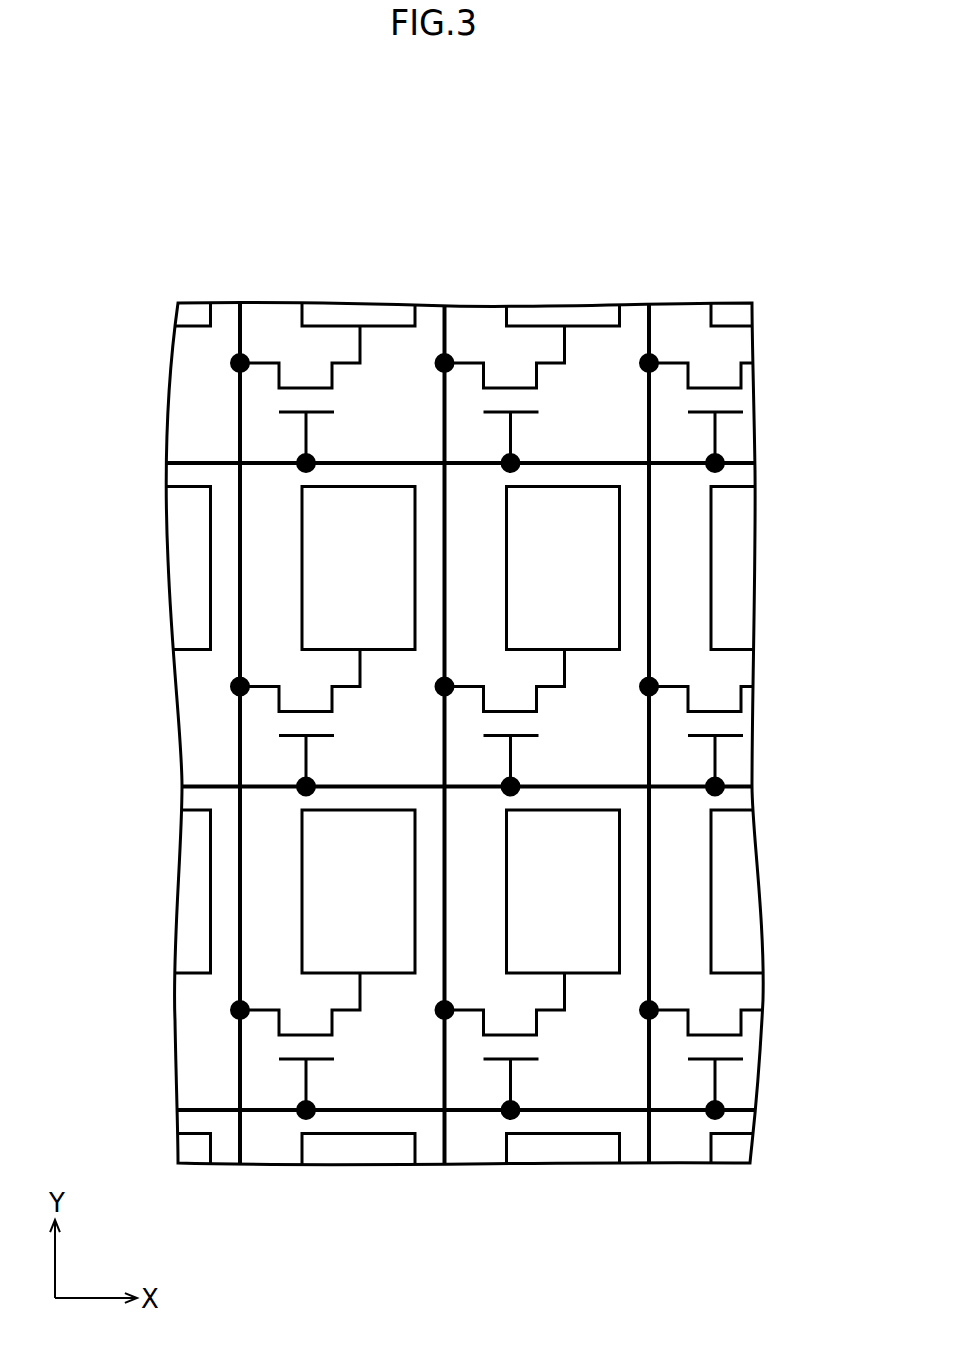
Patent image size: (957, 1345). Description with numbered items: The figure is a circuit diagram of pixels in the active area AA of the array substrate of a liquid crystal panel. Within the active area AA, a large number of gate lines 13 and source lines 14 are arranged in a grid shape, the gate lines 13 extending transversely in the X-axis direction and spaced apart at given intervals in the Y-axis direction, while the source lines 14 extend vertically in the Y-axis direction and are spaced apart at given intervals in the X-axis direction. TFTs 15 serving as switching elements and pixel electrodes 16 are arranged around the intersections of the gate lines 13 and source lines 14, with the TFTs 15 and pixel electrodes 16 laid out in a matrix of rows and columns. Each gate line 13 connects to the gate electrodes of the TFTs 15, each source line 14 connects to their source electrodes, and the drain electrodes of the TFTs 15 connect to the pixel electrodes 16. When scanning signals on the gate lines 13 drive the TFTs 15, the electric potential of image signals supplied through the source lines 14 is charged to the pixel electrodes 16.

The gate line 13 is at (195, 1110).
The source line 14 is at (647, 318).
The TFT 15 is at (519, 1002).
The pixel electrode 16 is at (585, 855).
The active area AA is at (744, 340).